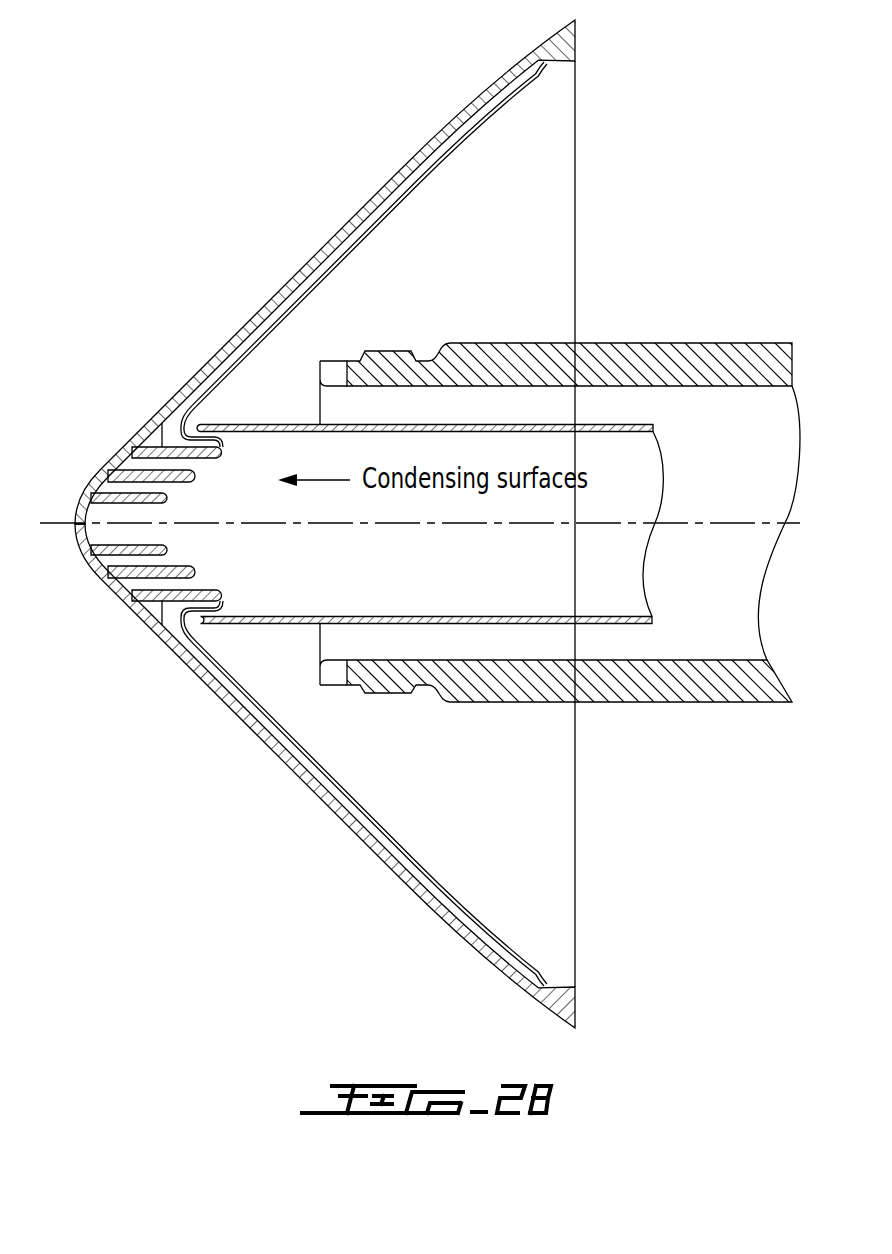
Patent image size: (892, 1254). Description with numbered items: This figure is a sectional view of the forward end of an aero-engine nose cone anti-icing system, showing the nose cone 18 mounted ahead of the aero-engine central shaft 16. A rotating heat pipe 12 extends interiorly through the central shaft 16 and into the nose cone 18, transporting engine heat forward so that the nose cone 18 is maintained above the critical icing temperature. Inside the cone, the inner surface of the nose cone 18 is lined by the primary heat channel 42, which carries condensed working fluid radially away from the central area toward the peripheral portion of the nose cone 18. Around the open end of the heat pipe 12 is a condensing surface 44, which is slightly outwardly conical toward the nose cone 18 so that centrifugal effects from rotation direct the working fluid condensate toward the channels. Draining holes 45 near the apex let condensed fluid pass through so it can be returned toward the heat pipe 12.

The rotating heat pipe 12 is at (611, 424).
The aero-engine central shaft 16 is at (717, 343).
The nose cone 18 is at (120, 351).
The primary heat channel 42 is at (389, 208).
The condensing surface 44 is at (488, 581).
The draining holes 45 is at (106, 497).